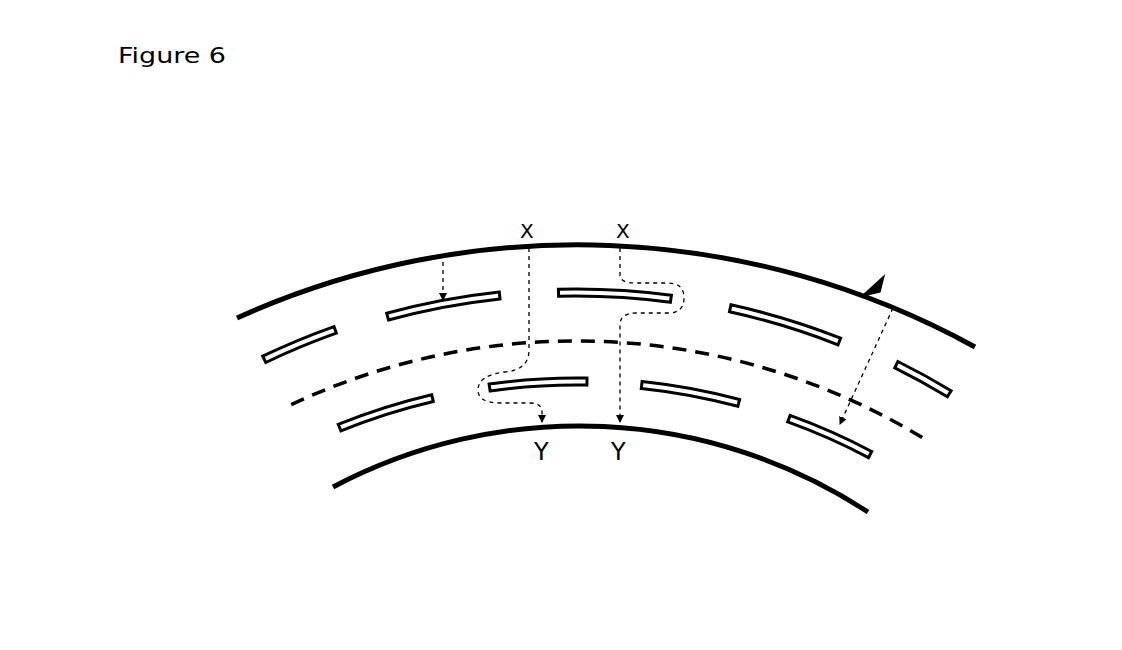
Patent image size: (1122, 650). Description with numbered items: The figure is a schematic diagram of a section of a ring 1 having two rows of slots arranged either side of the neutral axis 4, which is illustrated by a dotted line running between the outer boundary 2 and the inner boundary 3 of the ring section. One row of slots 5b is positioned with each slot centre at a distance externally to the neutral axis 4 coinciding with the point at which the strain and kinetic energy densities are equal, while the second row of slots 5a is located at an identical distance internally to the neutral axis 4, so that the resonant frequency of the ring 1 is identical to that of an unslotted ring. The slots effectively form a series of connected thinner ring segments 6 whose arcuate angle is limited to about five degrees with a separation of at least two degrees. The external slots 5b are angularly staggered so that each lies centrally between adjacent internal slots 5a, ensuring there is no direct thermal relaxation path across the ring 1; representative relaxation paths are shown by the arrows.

The ring 1 is at (876, 288).
The outer surface 2 is at (740, 258).
The inner surface 3 is at (700, 440).
The neutral axis 4 is at (928, 436).
The internal row of slots 5a is at (385, 415).
The external row of slots 5b is at (300, 345).
The thinner ring segment 6 is at (567, 265).